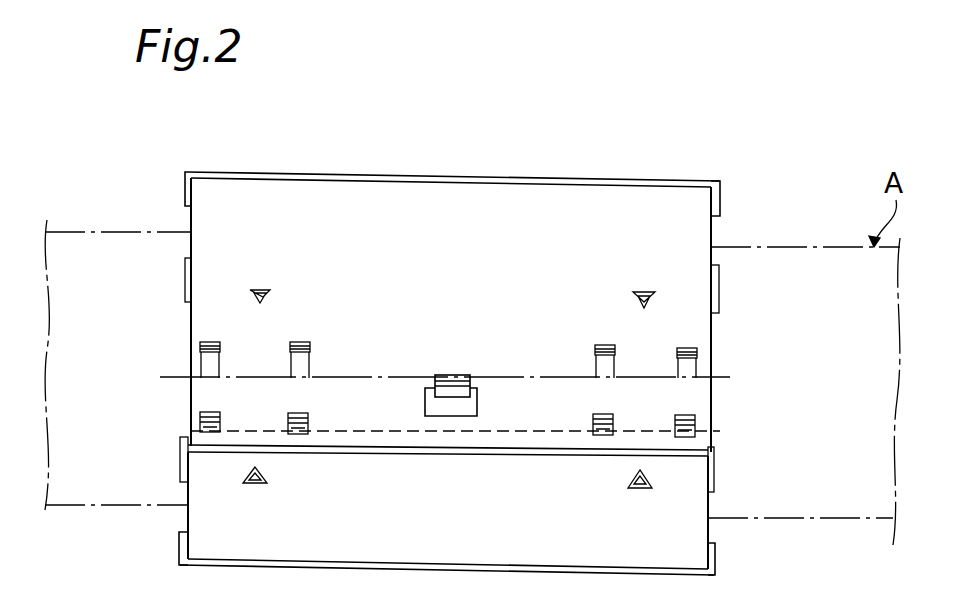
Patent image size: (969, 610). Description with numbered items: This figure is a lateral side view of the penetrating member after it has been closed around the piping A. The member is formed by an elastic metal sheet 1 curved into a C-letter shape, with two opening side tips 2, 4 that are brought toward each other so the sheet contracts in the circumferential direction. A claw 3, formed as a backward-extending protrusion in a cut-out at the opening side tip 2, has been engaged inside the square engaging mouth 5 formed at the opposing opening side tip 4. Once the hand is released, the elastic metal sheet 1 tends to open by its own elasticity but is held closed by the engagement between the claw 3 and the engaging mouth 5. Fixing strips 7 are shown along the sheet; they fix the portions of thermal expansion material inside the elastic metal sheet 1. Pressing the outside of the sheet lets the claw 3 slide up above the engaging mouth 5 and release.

The elastic metal sheet 1 is at (559, 205).
The opening side tip 2 is at (360, 453).
The claw 3 is at (452, 386).
The opening side tip 4 is at (522, 383).
The engaging mouth 5 is at (455, 412).
The fixing strip 7 is at (185, 190).